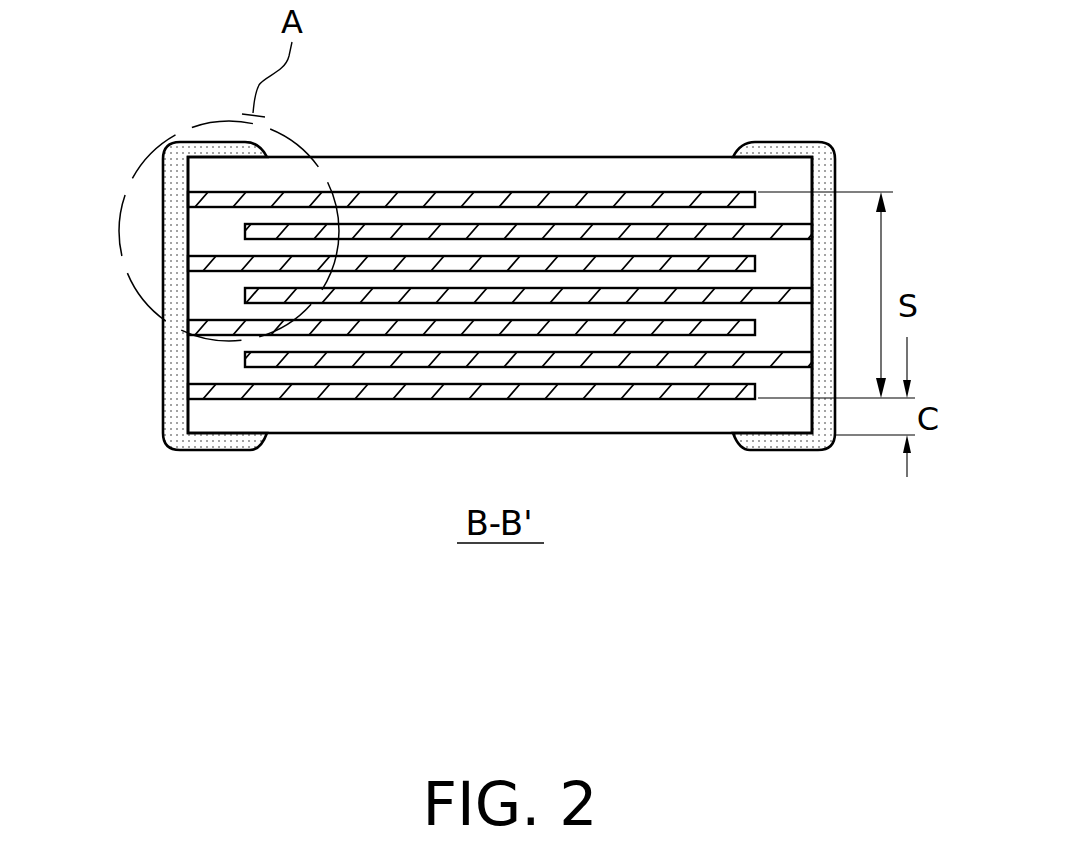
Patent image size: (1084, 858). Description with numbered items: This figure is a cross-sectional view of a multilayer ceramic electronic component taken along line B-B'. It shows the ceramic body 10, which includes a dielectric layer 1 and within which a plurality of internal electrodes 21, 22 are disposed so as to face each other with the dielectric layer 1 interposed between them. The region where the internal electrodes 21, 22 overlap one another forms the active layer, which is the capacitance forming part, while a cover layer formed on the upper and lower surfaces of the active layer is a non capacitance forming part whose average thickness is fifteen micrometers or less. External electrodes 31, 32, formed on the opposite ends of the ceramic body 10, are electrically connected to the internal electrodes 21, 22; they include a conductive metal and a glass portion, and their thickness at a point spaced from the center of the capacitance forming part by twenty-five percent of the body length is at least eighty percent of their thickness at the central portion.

The dielectric layer 1 is at (445, 280).
The ceramic body 10 is at (505, 157).
The internal electrode 21 is at (613, 196).
The internal electrode 22 is at (700, 232).
The external electrode 31 is at (173, 372).
The external electrode 32 is at (772, 447).